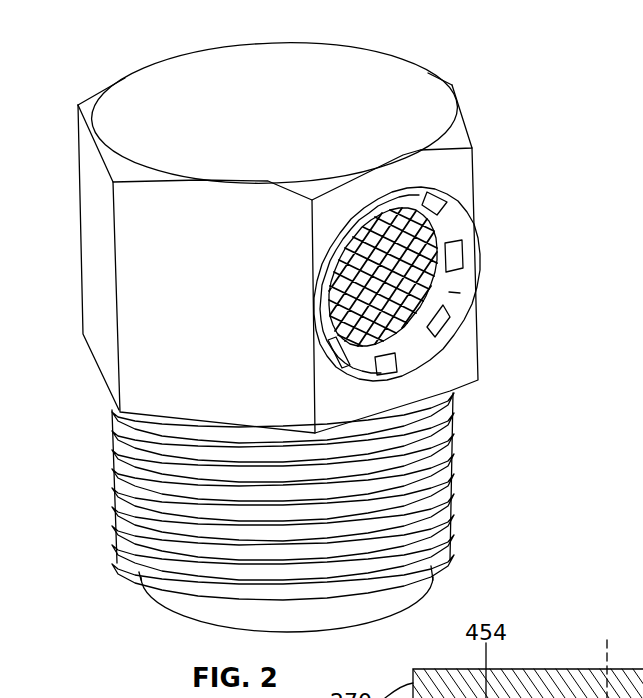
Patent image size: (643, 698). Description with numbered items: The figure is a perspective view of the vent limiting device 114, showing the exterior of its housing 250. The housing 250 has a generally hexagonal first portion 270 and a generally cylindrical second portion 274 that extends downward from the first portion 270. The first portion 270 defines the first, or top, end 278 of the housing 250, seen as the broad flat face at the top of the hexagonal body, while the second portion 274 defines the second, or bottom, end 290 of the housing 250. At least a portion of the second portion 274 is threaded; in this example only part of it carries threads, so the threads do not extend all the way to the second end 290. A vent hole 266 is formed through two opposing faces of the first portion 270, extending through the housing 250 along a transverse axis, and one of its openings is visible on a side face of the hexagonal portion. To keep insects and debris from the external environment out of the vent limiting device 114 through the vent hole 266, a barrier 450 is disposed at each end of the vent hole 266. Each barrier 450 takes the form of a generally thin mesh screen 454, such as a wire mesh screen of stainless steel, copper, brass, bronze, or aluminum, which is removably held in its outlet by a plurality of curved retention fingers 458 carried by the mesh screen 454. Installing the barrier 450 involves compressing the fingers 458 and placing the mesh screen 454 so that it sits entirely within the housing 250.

The vent limiting device 114 is at (443, 50).
The housing 250 is at (500, 113).
The vent hole 266 is at (447, 340).
The first portion 270 is at (102, 373).
The second portion 274 is at (118, 503).
The first end 278 is at (128, 97).
The second end 290 is at (175, 617).
The barrier 450 is at (449, 292).
The mesh screen 454 is at (427, 257).
The retention fingers 458 is at (442, 318).